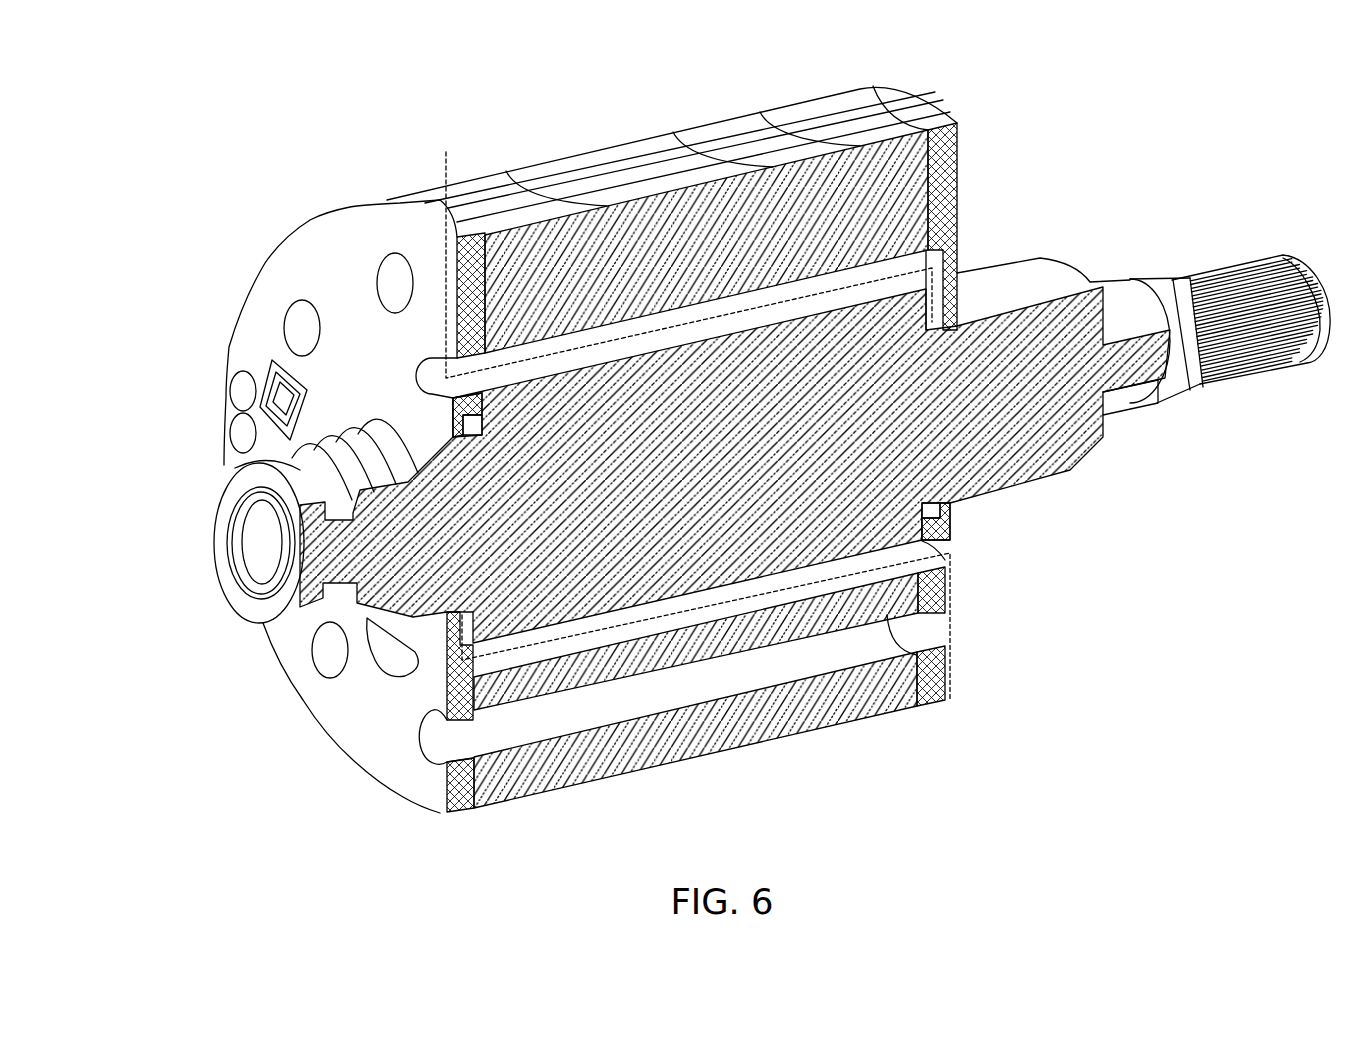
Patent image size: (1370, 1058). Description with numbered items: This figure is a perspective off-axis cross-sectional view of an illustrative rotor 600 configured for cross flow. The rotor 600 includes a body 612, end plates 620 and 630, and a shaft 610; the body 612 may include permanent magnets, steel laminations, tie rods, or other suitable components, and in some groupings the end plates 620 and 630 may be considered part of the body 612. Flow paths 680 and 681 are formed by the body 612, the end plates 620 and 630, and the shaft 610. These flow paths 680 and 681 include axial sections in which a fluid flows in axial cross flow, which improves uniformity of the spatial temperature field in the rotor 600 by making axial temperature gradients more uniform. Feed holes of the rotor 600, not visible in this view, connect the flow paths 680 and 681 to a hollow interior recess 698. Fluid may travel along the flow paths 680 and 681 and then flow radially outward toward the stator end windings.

The rotor 600 is at (279, 55).
The shaft 610 is at (740, 481).
The body 612 is at (730, 242).
The end plate 620 is at (280, 243).
The end plate 630 is at (957, 160).
The flow path 680 is at (425, 138).
The flow path 681 is at (929, 751).
The hollow interior recess 698 is at (240, 543).